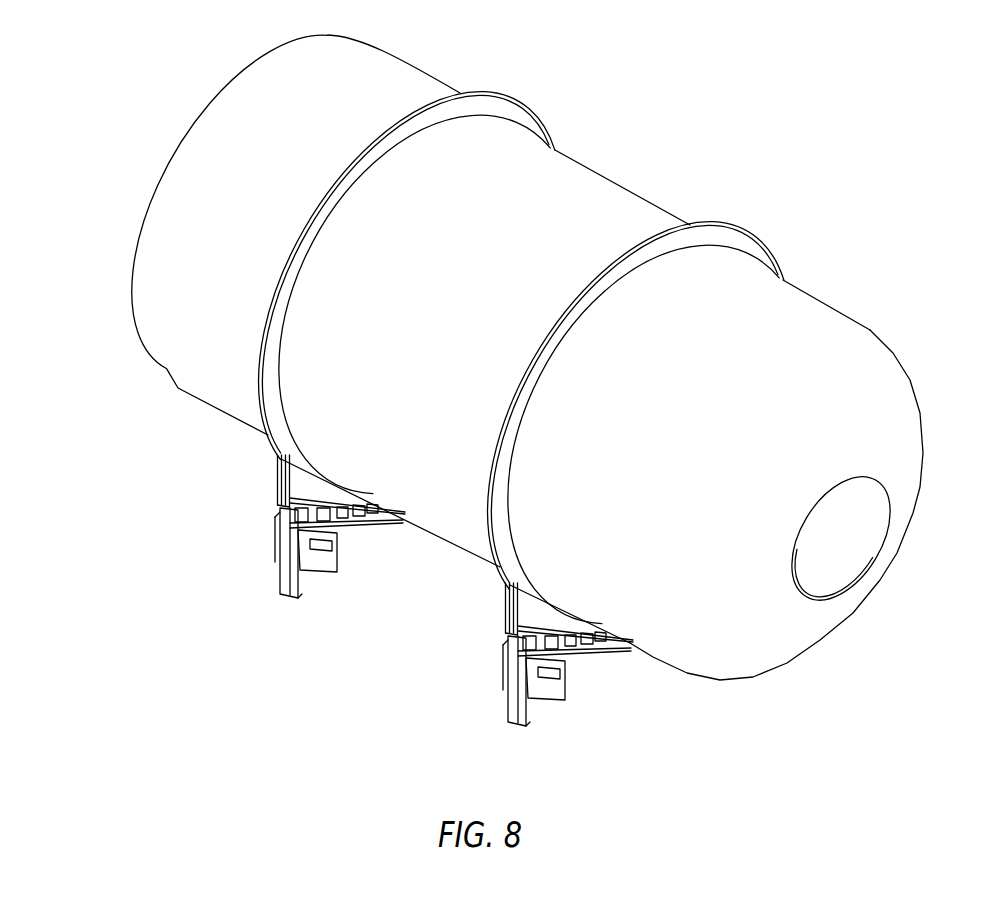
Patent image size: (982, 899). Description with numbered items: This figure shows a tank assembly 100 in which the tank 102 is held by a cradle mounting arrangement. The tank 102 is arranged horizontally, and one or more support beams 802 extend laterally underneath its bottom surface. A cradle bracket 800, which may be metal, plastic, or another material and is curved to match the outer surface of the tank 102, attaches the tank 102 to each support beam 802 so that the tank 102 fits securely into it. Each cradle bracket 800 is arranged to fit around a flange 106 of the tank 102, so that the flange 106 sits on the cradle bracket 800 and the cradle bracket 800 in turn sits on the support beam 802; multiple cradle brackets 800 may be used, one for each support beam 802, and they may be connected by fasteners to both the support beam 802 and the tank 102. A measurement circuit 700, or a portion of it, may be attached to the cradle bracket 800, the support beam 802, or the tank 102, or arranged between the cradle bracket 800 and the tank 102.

The tank assembly 100 is at (112, 577).
The tank 102 is at (845, 373).
The flange 106 is at (520, 113).
The measurement circuit 700 is at (327, 562).
The cradle bracket 800 is at (277, 498).
The support beam 802 is at (280, 527).